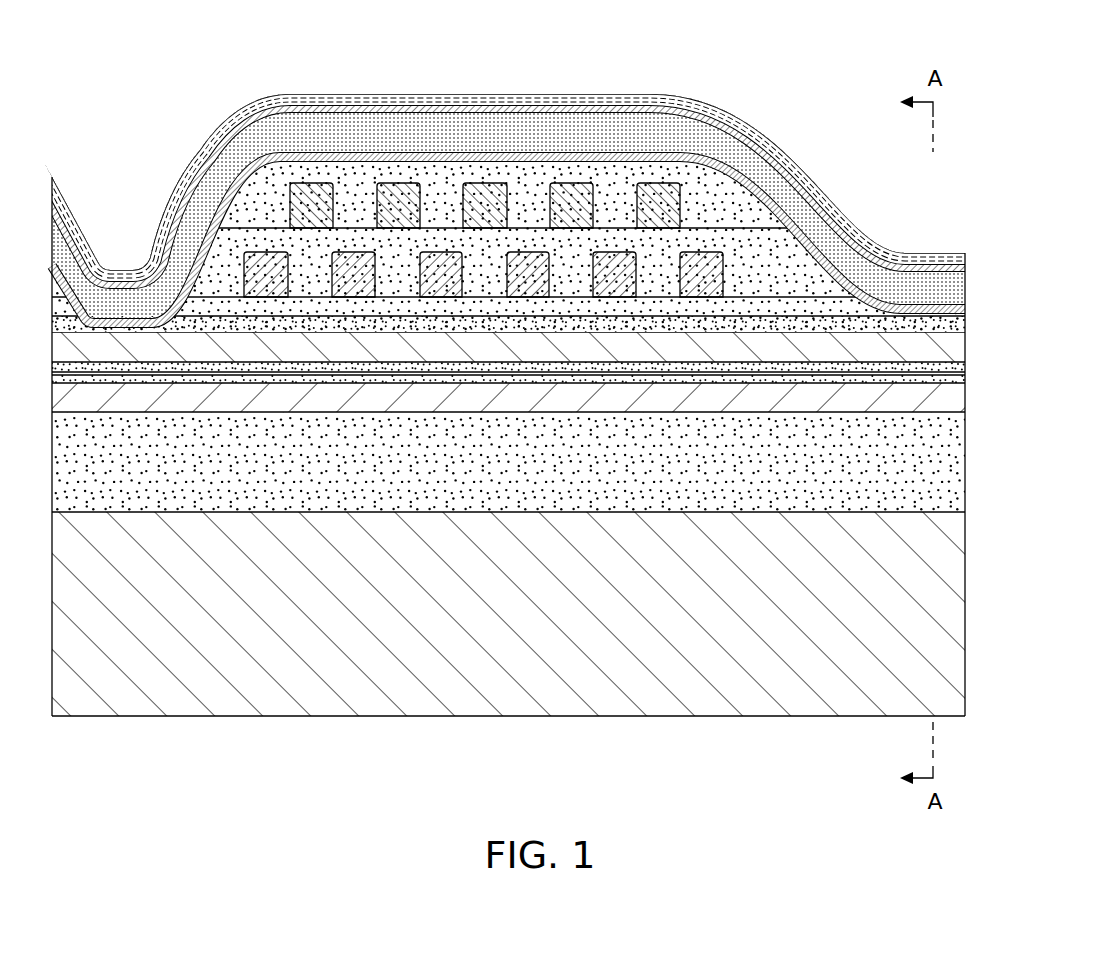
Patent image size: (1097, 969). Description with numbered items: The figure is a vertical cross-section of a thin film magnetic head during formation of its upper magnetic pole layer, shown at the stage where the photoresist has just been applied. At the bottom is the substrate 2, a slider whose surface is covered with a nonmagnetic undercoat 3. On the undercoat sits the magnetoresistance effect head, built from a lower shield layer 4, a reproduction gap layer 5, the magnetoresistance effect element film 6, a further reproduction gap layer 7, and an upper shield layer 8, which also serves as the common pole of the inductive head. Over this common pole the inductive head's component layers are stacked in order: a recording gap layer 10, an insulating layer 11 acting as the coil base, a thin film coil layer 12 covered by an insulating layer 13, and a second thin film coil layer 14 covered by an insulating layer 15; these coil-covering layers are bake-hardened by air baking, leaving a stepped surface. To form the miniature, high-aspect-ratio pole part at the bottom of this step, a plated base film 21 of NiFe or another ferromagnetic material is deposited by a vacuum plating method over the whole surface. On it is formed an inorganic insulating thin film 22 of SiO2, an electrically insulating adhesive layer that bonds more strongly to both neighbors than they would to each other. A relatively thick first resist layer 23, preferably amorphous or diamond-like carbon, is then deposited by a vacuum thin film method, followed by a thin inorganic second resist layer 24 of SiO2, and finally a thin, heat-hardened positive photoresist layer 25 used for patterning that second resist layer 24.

The substrate 2 is at (965, 585).
The nonmagnetic undercoat 3 is at (965, 460).
The lower shield layer 4 is at (965, 395).
The reproduction gap layer 5 is at (965, 378).
The magnetoresistance effect element film 6 is at (965, 370).
The reproduction gap layer 7 is at (965, 363).
The upper shield layer 8 is at (965, 348).
The recording gap layer 10 is at (965, 323).
The insulating layer 11 is at (753, 298).
The thin film coil layer 12 is at (441, 268).
The insulating layer 13 is at (703, 240).
The thin film coil layer 14 is at (574, 194).
The insulating layer 15 is at (620, 187).
The plated base film 21 is at (965, 320).
The inorganic insulating thin film 22 is at (965, 308).
The first resist layer 23 is at (965, 288).
The second resist layer 24 is at (965, 268).
The photoresist layer 25 is at (965, 258).